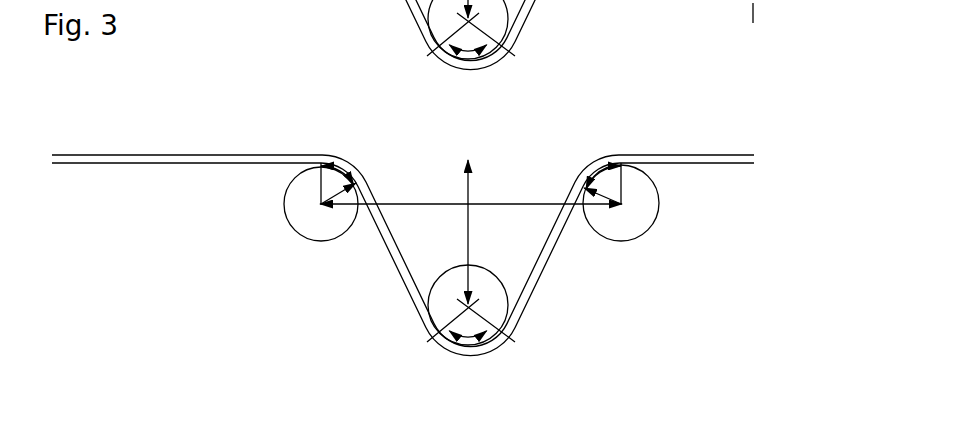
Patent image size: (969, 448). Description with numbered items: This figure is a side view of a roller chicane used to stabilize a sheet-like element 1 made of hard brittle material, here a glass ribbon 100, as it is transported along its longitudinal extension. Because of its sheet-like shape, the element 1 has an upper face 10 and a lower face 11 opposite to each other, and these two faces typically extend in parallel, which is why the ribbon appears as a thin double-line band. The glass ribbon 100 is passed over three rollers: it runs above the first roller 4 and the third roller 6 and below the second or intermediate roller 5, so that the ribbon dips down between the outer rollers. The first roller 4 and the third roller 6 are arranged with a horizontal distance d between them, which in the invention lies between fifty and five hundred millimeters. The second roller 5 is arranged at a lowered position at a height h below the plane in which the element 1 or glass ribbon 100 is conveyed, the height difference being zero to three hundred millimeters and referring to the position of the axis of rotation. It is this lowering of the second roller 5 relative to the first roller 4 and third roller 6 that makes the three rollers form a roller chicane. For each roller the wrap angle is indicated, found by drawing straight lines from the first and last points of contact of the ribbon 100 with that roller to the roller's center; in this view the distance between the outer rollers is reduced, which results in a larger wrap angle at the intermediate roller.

The sheet-like element 1 is at (422, 178).
The glass ribbon 100 is at (422, 178).
The first roller 4 is at (245, 207).
The second roller 5 is at (506, 298).
The third roller 6 is at (658, 213).
The upper face 10 is at (92, 155).
The lower face 11 is at (403, 178).
The height h is at (468, 152).
The horizontal distance d is at (471, 201).